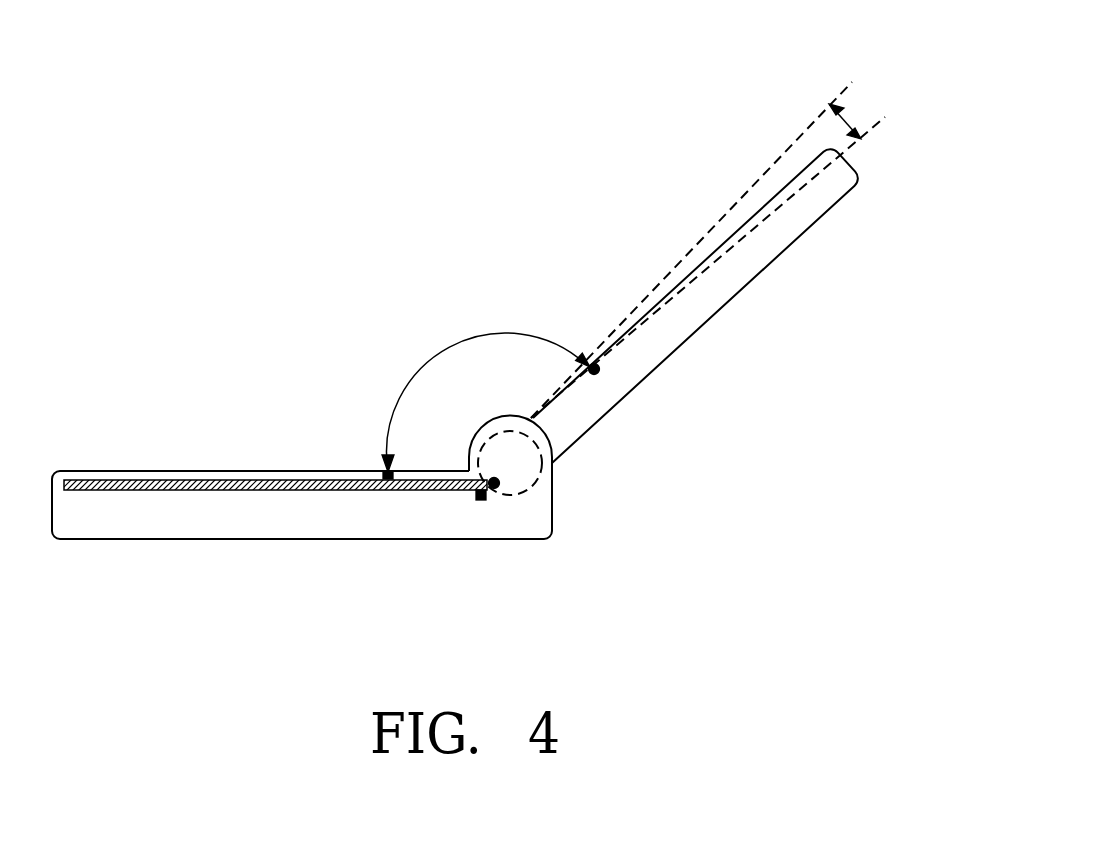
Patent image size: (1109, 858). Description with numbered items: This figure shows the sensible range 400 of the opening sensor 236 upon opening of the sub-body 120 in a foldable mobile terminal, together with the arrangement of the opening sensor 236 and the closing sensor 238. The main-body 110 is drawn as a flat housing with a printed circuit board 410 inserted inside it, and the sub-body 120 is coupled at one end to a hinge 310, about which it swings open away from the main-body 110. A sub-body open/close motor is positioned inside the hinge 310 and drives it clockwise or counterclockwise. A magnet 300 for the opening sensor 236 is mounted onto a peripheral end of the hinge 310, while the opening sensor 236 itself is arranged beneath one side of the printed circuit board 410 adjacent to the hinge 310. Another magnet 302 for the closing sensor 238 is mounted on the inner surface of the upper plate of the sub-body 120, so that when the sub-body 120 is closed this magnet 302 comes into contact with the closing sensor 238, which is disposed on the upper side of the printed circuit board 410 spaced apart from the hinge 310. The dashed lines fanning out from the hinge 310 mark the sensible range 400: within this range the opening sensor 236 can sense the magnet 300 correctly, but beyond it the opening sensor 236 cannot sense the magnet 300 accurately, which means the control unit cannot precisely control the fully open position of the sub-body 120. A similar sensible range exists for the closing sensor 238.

The main-body 110 is at (237, 528).
The sub-body 120 is at (737, 273).
The opening sensor 236 is at (481, 501).
The closing sensor 238 is at (382, 470).
The magnet 300 is at (496, 489).
The magnet 302 is at (598, 373).
The hinge 310 is at (527, 472).
The sensible range 400 is at (850, 122).
The printed circuit board 410 is at (150, 482).